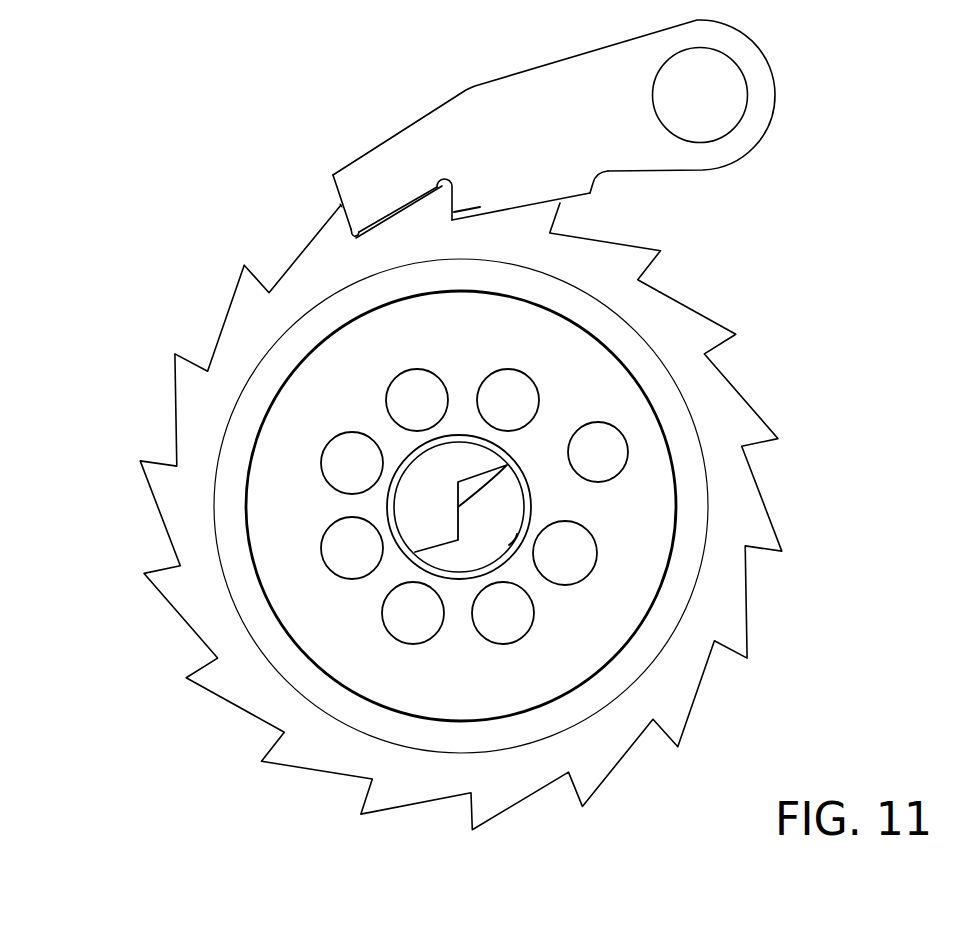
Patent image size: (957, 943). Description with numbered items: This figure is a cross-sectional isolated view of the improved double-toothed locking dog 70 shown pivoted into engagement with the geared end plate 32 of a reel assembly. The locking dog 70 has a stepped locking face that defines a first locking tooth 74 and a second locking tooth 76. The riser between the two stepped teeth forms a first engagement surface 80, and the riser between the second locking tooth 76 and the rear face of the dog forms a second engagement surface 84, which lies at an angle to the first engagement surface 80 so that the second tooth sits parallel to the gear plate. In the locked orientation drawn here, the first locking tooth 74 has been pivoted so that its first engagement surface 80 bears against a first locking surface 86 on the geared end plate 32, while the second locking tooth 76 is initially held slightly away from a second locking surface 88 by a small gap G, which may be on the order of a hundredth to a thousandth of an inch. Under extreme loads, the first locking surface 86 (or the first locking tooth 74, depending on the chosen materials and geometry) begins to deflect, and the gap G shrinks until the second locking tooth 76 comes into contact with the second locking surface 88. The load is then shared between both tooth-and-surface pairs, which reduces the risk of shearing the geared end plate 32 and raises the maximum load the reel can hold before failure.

The geared end plate 32 is at (748, 607).
The locking dog 70 is at (752, 152).
The first locking tooth 74 is at (581, 198).
The second locking tooth 76 is at (407, 207).
The first engagement surface 80 is at (442, 180).
The second engagement surface 84 is at (338, 200).
The first locking surface 86 is at (507, 207).
The second locking surface 88 is at (358, 237).
The gap G is at (333, 206).